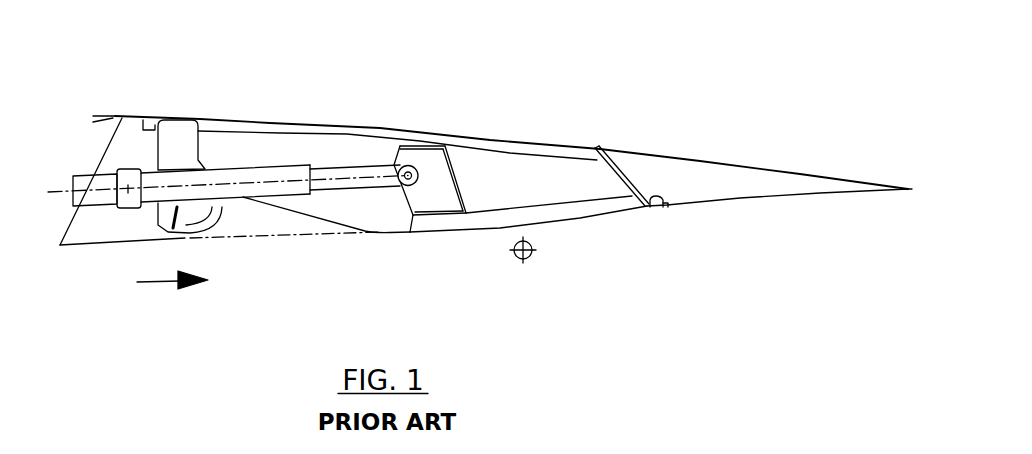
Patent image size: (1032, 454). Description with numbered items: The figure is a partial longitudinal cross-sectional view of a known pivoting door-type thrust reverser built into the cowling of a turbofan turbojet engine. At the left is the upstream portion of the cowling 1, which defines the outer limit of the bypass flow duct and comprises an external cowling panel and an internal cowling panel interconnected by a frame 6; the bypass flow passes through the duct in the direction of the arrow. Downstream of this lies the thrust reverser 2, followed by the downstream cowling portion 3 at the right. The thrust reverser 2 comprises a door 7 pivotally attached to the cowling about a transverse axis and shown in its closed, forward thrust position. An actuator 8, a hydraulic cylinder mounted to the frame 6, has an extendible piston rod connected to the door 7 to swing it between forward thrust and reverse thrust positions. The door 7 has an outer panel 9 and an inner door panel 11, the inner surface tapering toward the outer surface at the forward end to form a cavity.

The upstream portion of the cowling 1 is at (115, 100).
The thrust reverser 2 is at (558, 98).
The downstream cowling portion 3 is at (693, 181).
The frame 6 is at (118, 220).
The door 7 is at (347, 133).
The actuator 8 is at (256, 177).
The outer panel 9 is at (418, 116).
The inner door panel 11 is at (580, 232).